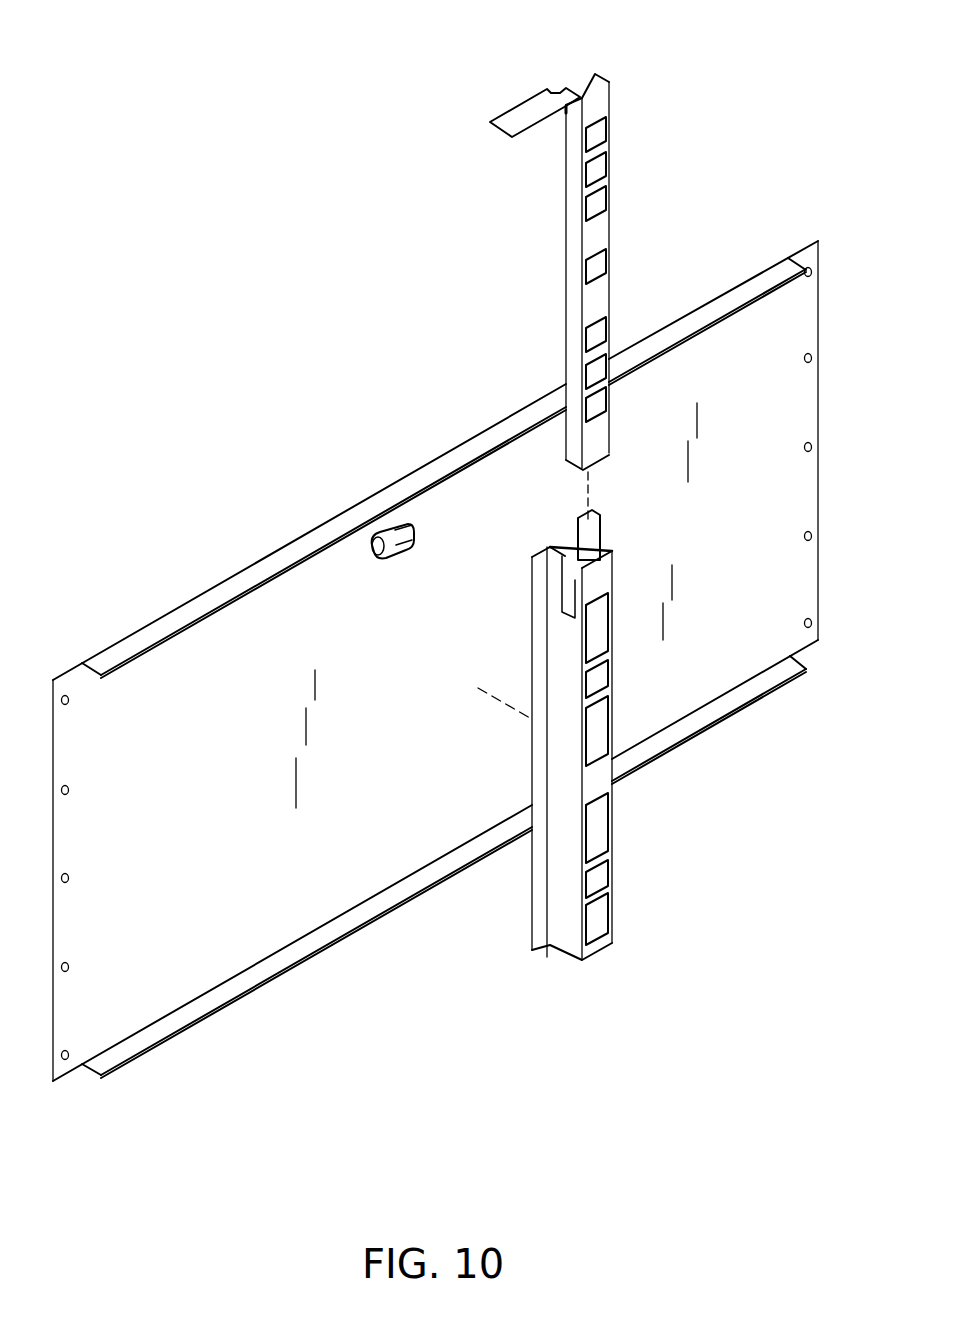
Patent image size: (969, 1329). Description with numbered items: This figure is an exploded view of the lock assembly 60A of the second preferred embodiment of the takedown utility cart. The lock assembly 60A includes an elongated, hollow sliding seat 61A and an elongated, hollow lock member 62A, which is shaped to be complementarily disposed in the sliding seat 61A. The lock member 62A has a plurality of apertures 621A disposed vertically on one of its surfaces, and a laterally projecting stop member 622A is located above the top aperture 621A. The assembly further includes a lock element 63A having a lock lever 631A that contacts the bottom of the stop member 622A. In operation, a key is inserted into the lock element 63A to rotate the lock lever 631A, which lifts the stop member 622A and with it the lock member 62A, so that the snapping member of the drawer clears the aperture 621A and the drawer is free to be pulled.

The lock assembly 60A is at (628, 532).
The sliding seat 61A is at (570, 935).
The lock member 62A is at (585, 267).
The apertures 621A is at (600, 166).
The stop member 622A is at (530, 112).
The lock element 63A is at (376, 448).
The lock lever 631A is at (400, 533).